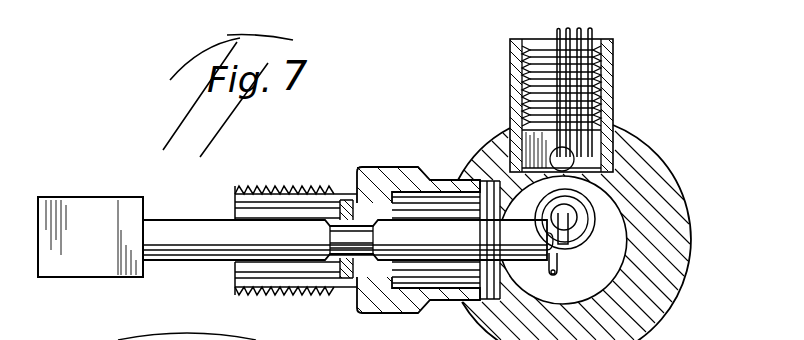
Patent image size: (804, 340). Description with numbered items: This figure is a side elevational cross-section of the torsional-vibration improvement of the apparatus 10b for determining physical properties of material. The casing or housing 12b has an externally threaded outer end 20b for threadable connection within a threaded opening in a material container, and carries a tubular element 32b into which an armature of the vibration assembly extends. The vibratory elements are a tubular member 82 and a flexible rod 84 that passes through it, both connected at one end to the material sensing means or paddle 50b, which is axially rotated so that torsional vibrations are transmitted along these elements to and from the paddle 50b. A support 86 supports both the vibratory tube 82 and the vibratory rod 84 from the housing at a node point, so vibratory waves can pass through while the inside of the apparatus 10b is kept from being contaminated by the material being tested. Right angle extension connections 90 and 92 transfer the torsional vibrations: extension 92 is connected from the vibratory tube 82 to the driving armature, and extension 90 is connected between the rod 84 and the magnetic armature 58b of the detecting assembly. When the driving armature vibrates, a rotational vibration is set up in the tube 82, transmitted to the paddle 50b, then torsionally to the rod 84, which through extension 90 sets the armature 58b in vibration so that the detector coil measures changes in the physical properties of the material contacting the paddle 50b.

The apparatus 10b is at (690, 202).
The housing 12b is at (668, 160).
The externally threaded outer end 20b is at (288, 186).
The tubular element 32b is at (613, 66).
The paddle 50b is at (78, 197).
The magnetic armature 58b is at (571, 227).
The tubular member 82 is at (188, 220).
The flexible rod 84 is at (336, 240).
The support 86 is at (346, 208).
The right angle extension connection 90 is at (570, 246).
The right angle extension connection 92 is at (557, 262).